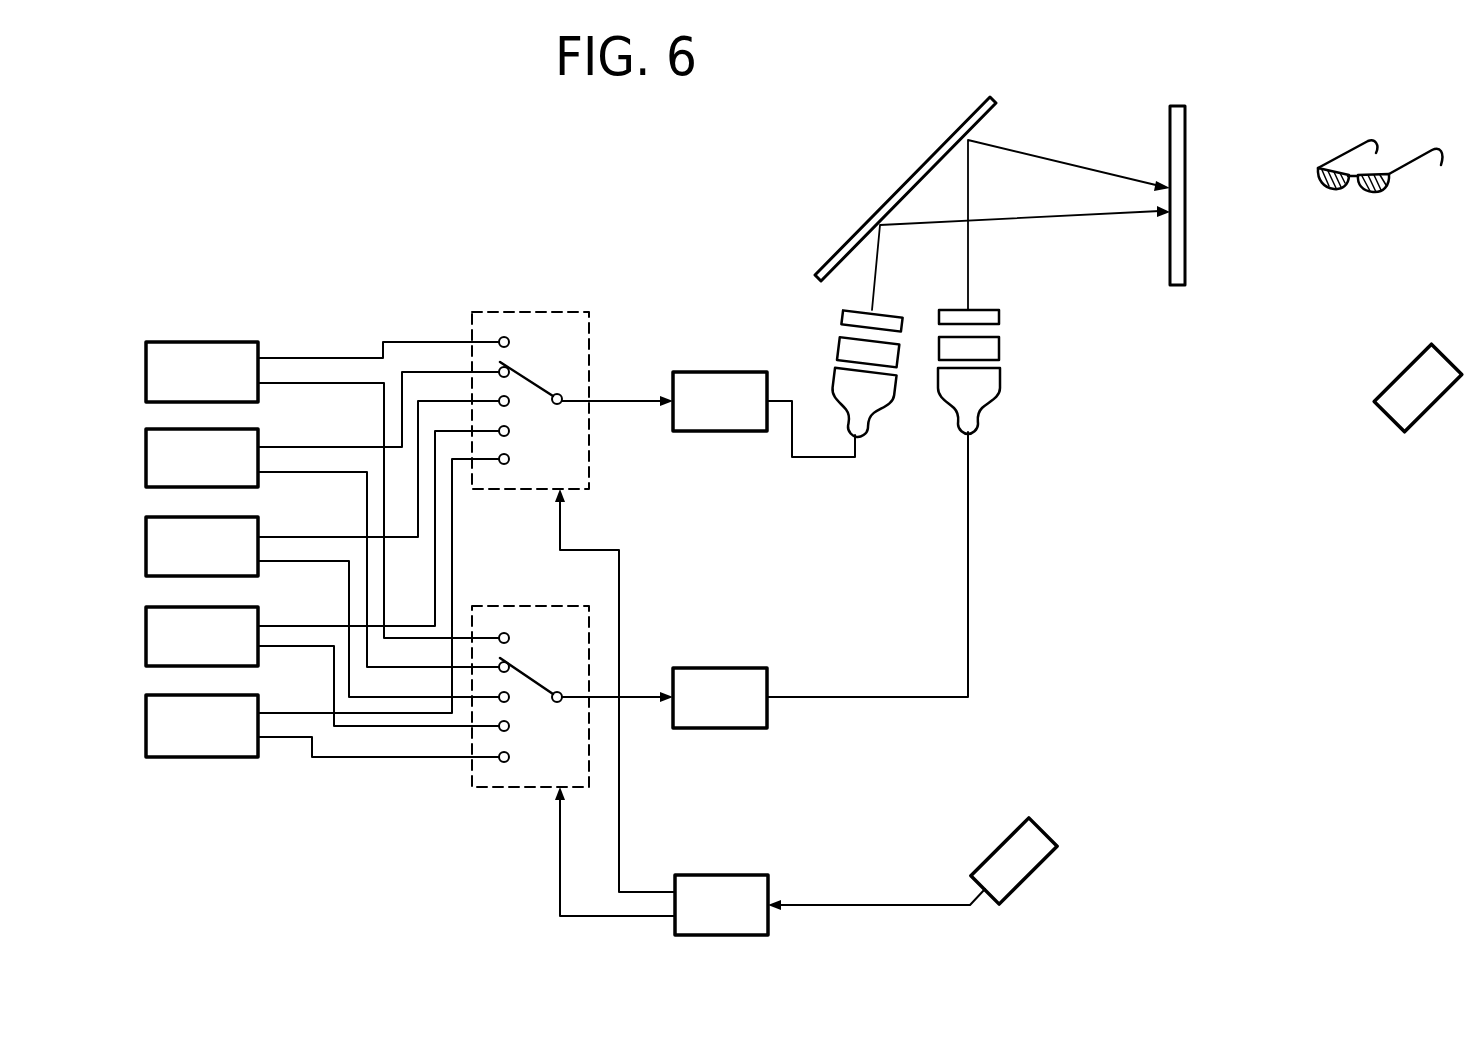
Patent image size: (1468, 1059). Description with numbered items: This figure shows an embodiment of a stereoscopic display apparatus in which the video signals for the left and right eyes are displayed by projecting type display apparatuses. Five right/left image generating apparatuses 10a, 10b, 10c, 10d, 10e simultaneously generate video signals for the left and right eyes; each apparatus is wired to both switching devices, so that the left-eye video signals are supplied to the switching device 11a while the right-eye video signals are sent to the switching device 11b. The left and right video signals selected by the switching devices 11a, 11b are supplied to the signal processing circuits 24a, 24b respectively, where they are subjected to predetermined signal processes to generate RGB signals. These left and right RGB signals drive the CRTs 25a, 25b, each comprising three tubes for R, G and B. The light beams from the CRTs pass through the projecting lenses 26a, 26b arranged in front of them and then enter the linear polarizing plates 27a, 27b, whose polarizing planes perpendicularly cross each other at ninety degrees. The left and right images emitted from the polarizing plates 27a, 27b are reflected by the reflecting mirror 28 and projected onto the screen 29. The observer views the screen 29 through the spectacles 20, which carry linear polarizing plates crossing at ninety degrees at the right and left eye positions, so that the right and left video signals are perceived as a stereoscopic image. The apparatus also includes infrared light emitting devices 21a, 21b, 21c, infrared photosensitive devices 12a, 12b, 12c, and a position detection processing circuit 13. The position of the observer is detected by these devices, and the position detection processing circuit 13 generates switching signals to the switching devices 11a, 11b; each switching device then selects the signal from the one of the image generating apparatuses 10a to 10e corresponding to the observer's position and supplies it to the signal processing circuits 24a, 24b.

The right/left image generating apparatus 10a is at (258, 518).
The right/left image generating apparatus 10b is at (258, 608).
The right/left image generating apparatus 10c is at (258, 430).
The right/left image generating apparatus 10d is at (258, 696).
The right/left image generating apparatus 10e is at (258, 343).
The switching device 11a is at (562, 312).
The switching device 11b is at (527, 606).
The position detection processing circuit 13 is at (753, 875).
The infrared photosensitive device 12a is at (968, 873).
The infrared photosensitive device 12b is at (968, 873).
The infrared photosensitive device 12c is at (1043, 860).
The signal processing circuit 24a is at (695, 431).
The signal processing circuit 24b is at (713, 728).
The CRT 25a is at (867, 430).
The CRT 25b is at (983, 417).
The projecting lens 26a is at (836, 350).
The projecting lens 26b is at (1000, 352).
The linear polarizing plate 27a is at (838, 313).
The linear polarizing plate 27b is at (1000, 318).
The reflecting mirror 28 is at (908, 178).
The screen 29 is at (1180, 285).
The spectacles 20 is at (1330, 187).
The infrared light emitting device 21a is at (1397, 418).
The infrared light emitting device 21b is at (1397, 418).
The infrared light emitting device 21c is at (1395, 427).